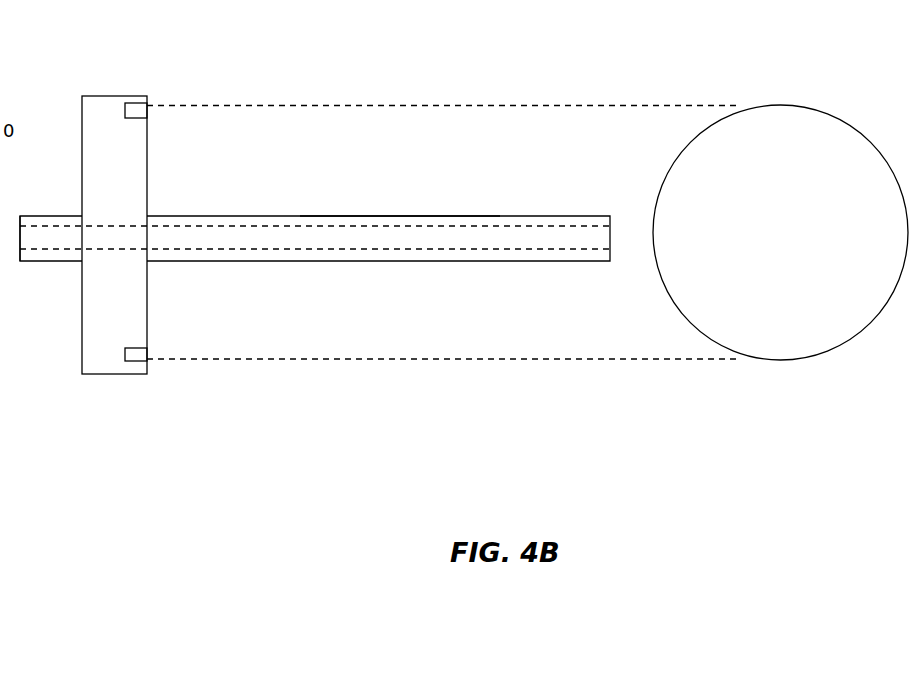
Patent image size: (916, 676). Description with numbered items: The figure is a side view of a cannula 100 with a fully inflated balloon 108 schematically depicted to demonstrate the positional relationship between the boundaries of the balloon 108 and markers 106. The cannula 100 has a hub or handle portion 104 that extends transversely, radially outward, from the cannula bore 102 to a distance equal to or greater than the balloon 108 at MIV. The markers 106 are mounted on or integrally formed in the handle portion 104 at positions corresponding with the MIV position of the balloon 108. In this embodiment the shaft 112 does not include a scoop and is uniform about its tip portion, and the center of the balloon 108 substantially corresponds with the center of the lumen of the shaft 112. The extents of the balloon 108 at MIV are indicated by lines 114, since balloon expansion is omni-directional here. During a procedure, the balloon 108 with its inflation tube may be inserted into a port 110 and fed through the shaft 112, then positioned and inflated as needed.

The cannula 100 is at (253, 140).
The cannula bore 102 is at (424, 249).
The handle portion 104 is at (102, 363).
The markers 106 is at (138, 110).
The balloon 108 is at (793, 345).
The port 110 is at (38, 262).
The shaft 112 is at (360, 216).
The lines 114 is at (483, 105).